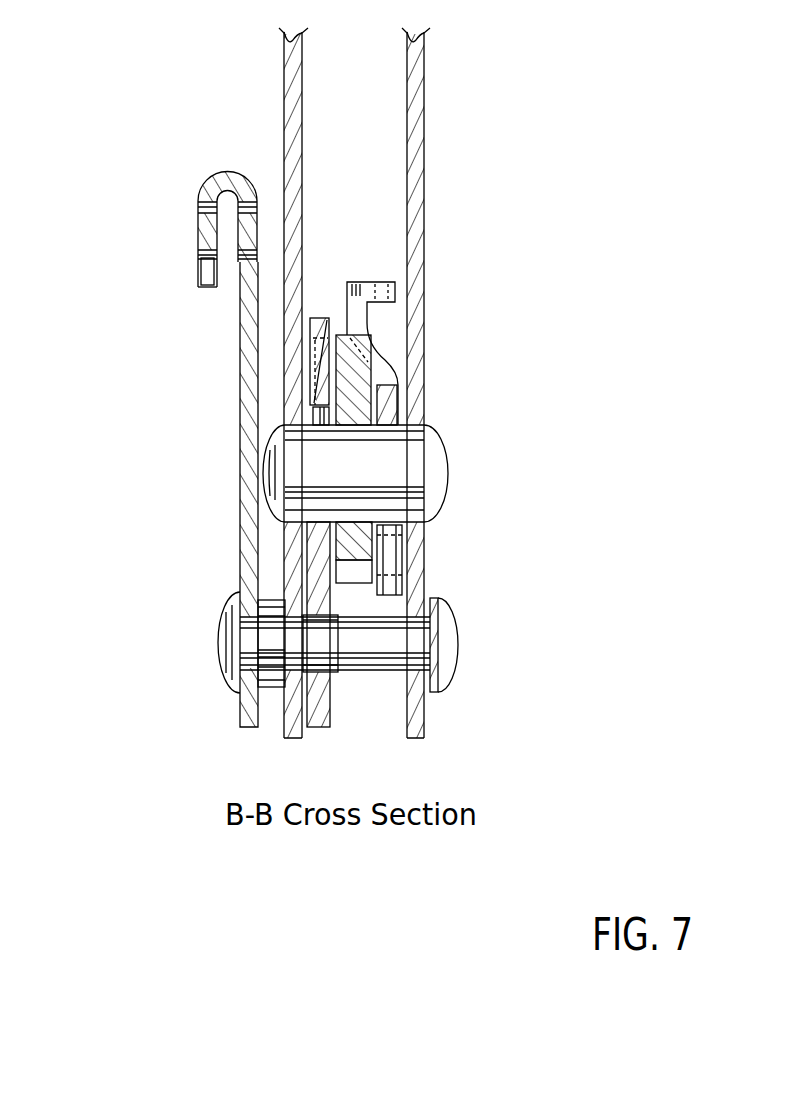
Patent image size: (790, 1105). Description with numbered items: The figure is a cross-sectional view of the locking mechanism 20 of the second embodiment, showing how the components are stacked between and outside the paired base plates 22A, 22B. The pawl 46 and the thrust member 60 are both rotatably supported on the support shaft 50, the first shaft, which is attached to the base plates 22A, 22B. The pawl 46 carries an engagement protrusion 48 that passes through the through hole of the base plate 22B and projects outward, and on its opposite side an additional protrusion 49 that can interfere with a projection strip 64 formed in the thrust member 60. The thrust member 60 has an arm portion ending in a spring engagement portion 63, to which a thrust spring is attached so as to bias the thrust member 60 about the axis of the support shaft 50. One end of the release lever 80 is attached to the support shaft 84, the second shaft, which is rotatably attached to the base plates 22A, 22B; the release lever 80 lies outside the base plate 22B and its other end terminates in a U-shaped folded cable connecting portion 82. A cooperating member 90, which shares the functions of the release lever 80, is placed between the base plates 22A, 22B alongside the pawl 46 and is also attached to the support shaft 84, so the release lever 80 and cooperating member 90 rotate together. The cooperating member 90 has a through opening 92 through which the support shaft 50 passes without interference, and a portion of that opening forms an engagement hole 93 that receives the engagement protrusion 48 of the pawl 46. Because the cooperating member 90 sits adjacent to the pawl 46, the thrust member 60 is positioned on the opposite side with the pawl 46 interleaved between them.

The locking mechanism 20 is at (84, 83).
The base plate 22A is at (417, 94).
The base plate 22B is at (283, 92).
The pawl 46 is at (350, 342).
The engagement protrusion 48 is at (327, 382).
The additional protrusion 49 is at (378, 560).
The support shaft 50 is at (390, 473).
The thrust member 60 is at (388, 402).
The spring engagement portion 63 is at (398, 281).
The projection strip 64 is at (388, 585).
The release lever 80 is at (247, 492).
The cable connecting portion 82 is at (198, 240).
The support shaft 84 is at (398, 643).
The cooperating member 90 is at (322, 565).
The through opening 92 is at (316, 421).
The engagement hole 93 is at (330, 360).